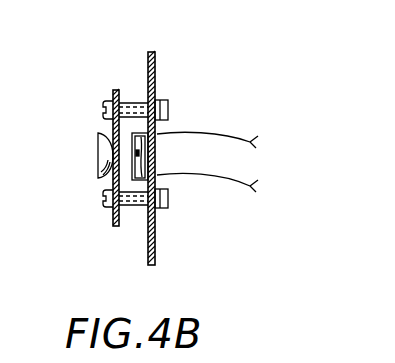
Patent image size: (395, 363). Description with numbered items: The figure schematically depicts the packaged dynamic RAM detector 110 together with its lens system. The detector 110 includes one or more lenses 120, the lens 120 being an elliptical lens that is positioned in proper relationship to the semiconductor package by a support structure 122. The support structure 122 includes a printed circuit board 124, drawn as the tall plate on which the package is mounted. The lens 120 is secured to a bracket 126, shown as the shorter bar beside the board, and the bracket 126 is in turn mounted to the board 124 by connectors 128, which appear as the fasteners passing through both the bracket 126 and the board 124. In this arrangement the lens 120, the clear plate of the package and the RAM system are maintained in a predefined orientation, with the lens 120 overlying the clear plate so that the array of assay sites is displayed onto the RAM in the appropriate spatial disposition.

The detector 110 is at (86, 220).
The lens 120 is at (98, 152).
The support structure 122 is at (130, 230).
The printed circuit board 124 is at (157, 63).
The bracket 126 is at (116, 90).
The connectors 128 is at (157, 97).